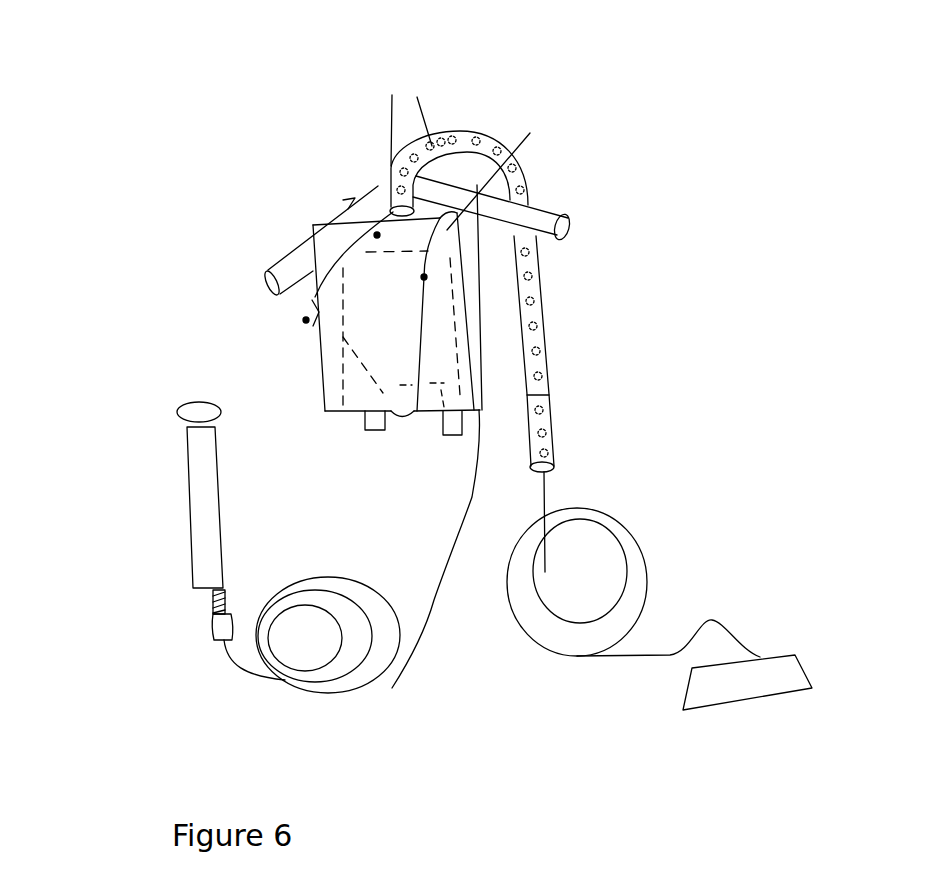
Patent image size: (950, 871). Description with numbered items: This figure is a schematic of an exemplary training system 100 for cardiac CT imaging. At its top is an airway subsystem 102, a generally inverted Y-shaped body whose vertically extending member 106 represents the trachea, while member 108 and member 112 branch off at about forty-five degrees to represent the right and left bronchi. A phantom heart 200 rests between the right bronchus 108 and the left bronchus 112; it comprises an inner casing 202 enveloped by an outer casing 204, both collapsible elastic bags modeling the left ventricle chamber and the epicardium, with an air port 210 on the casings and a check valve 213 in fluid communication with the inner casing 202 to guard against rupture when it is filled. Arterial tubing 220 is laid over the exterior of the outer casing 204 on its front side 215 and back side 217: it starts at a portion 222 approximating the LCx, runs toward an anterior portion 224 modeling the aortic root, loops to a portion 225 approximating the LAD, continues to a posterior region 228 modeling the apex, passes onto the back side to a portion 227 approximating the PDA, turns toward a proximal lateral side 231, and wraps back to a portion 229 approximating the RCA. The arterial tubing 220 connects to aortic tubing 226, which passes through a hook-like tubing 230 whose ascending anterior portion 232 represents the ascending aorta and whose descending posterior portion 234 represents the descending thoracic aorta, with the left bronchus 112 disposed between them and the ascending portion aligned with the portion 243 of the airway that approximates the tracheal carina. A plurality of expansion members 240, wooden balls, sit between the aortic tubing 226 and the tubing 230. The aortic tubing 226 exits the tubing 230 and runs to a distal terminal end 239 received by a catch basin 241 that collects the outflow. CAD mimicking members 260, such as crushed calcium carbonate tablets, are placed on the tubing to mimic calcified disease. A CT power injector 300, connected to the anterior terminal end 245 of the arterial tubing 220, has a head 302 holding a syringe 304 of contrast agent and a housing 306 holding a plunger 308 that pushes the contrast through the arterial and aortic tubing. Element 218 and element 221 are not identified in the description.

The training system 100 is at (518, 57).
The airway subsystem 102 is at (430, 90).
The vertically extending member 106 is at (405, 112).
The member (right bronchus) 108 is at (266, 287).
The member (left bronchus) 112 is at (550, 222).
The phantom heart 200 is at (593, 305).
The inner casing 202 is at (468, 360).
The outer casing 204 is at (340, 416).
The air port 210 is at (360, 395).
The check valve 213 is at (452, 436).
The front side 215 is at (323, 262).
The back side 217 is at (487, 389).
The tab 218 is at (373, 432).
The arterial tubing 220 is at (435, 620).
The seam line 221 is at (511, 172).
The portion (LCx position) 222 is at (475, 346).
The anterior portion 224 is at (470, 230).
The portion (LAD position) 225 is at (434, 322).
The aortic tubing 226 is at (648, 527).
The portion (PDA position) 227 is at (323, 366).
The posterior region 228 is at (423, 400).
The portion (RCA position) 229 is at (332, 246).
The tubing 230 is at (562, 421).
The proximal lateral side 231 is at (322, 388).
The ascending anterior portion 232 is at (386, 167).
The descending posterior portion 234 is at (548, 448).
The distal terminal end 239 is at (760, 657).
The plurality of expansion members 240 is at (487, 137).
The catch basin 241 is at (751, 692).
The portion (tracheal carina) / distal terminal end 243 is at (449, 136).
The anterior terminal end 245 is at (218, 645).
The CAD mimicking members 260 is at (377, 235).
The CT power injector 300 is at (122, 528).
The head 302 is at (228, 584).
The syringe 304 is at (212, 603).
The housing 306 is at (219, 476).
The plunger 308 is at (182, 415).